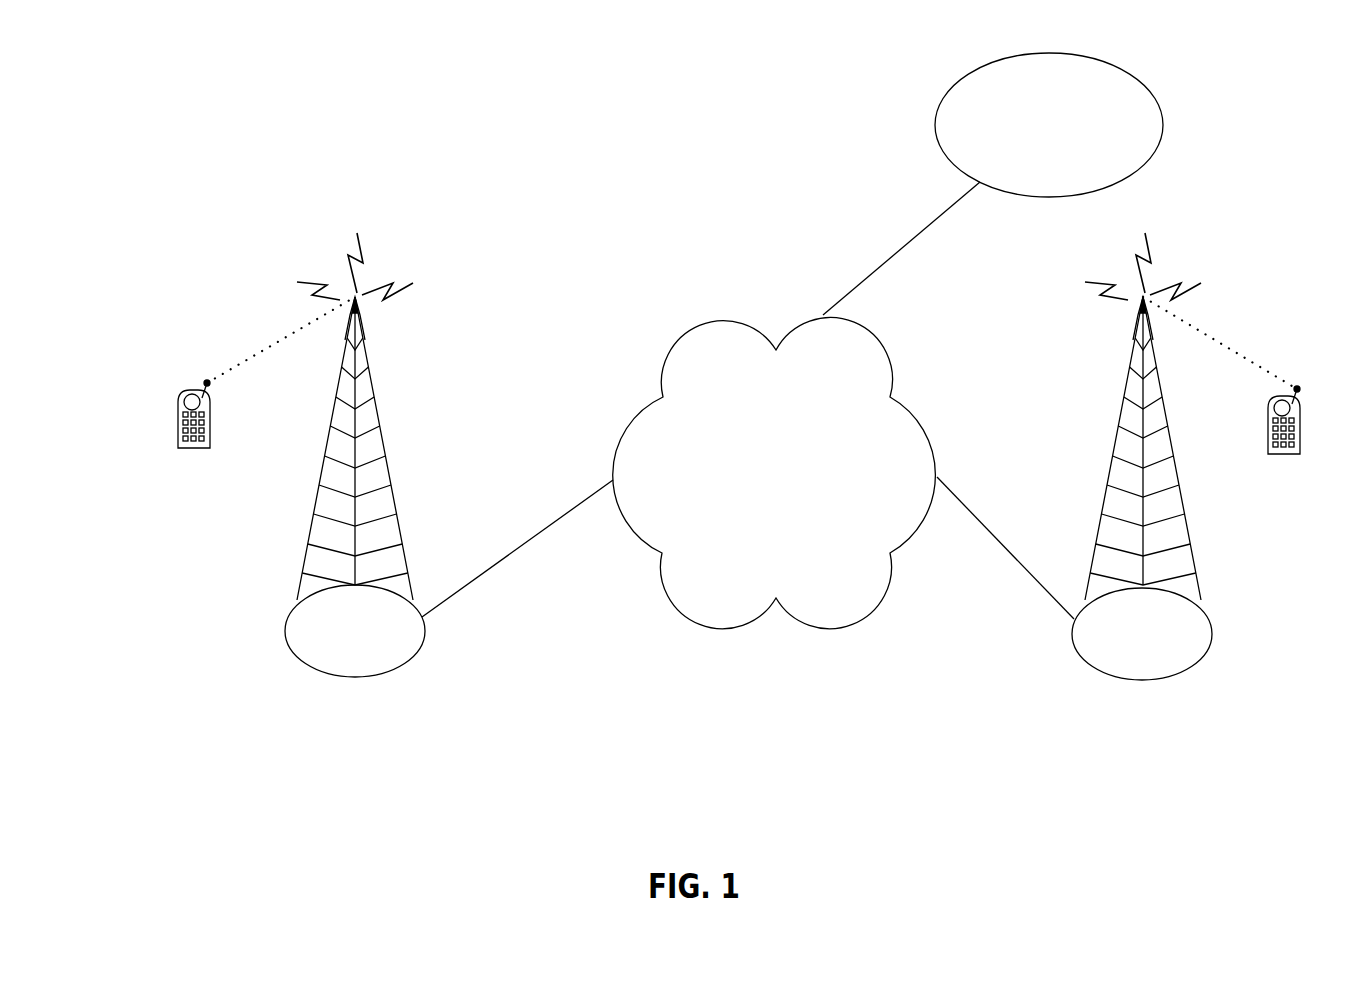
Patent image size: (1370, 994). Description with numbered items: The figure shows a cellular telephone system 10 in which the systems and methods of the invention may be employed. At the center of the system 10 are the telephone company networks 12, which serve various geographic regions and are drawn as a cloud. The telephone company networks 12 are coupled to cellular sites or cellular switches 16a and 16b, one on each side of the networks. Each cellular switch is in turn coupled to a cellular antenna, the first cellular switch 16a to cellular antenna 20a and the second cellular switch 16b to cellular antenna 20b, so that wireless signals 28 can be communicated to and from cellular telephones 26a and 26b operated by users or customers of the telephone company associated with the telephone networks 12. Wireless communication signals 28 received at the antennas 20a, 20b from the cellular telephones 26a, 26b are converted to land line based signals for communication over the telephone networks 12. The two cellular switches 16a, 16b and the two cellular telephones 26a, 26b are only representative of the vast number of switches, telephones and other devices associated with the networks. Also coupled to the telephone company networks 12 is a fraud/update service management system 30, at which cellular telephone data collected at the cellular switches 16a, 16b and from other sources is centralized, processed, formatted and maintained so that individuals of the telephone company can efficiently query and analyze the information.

The system 10 is at (543, 45).
The telephone company networks 12 is at (925, 420).
The cellular switch 16a is at (285, 630).
The cellular switch 16b is at (1212, 638).
The cellular antenna 20a is at (380, 430).
The cellular antenna 20b is at (1163, 407).
The cellular telephone 26a is at (197, 431).
The cellular telephone 26b is at (1288, 434).
The wireless signals 28 is at (1252, 350).
The fraud/update service management system 30 is at (1163, 125).